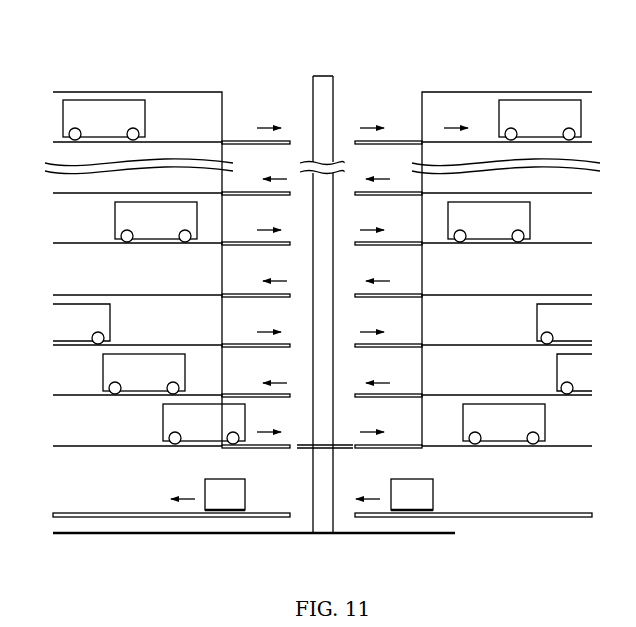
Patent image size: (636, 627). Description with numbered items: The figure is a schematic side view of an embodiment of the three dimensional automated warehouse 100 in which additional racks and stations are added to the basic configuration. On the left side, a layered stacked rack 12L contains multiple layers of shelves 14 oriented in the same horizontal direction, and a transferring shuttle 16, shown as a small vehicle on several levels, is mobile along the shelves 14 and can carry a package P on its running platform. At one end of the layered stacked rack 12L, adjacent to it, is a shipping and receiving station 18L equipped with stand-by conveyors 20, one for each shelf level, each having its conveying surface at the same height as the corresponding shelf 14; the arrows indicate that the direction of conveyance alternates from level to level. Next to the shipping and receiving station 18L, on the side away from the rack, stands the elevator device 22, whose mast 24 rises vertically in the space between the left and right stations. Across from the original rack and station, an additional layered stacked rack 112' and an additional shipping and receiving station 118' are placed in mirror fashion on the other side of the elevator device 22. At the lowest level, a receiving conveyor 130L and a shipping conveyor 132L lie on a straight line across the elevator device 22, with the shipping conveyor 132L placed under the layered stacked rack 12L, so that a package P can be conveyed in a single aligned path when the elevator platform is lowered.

The three dimensional automated warehouse 100 is at (322, 289).
The layered stacked rack 12L is at (208, 90).
The shelf 14 is at (175, 295).
The transferring shuttle 16 is at (115, 105).
The shipping and receiving station 18L is at (253, 108).
The stand-by conveyor 20 is at (289, 197).
The elevator device 22 is at (336, 107).
The mast 24 is at (327, 122).
The additional layered stacked rack 112' is at (506, 240).
The additional shipping and receiving station 118' is at (414, 231).
The package P is at (237, 495).
The receiving conveyor 130L is at (397, 517).
The shipping conveyor 132L is at (128, 519).